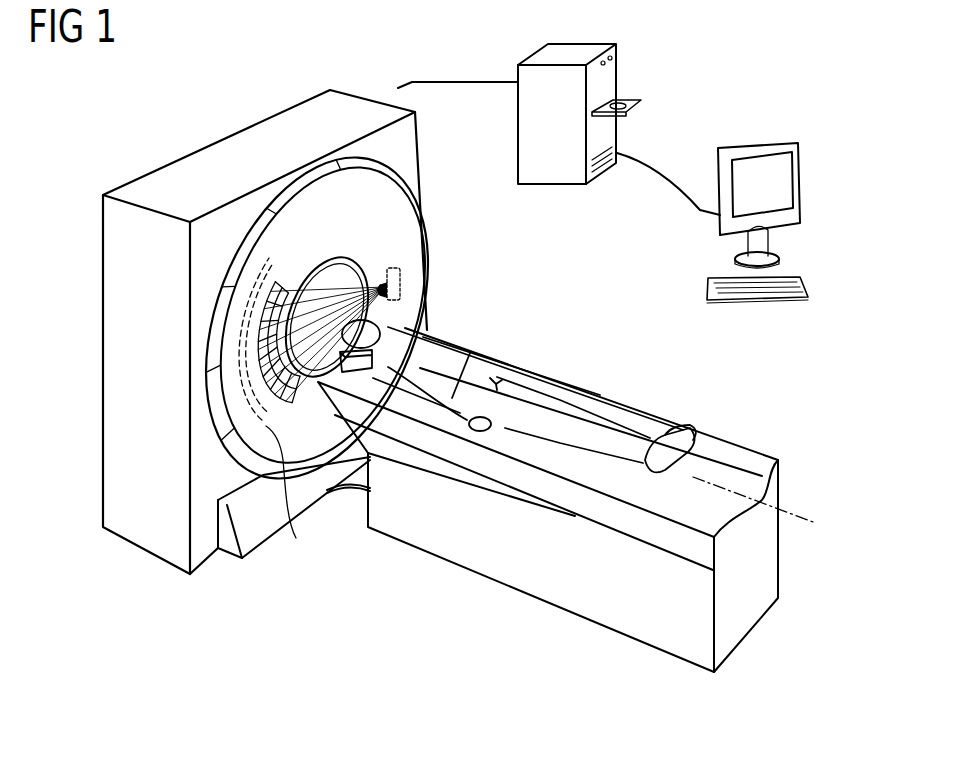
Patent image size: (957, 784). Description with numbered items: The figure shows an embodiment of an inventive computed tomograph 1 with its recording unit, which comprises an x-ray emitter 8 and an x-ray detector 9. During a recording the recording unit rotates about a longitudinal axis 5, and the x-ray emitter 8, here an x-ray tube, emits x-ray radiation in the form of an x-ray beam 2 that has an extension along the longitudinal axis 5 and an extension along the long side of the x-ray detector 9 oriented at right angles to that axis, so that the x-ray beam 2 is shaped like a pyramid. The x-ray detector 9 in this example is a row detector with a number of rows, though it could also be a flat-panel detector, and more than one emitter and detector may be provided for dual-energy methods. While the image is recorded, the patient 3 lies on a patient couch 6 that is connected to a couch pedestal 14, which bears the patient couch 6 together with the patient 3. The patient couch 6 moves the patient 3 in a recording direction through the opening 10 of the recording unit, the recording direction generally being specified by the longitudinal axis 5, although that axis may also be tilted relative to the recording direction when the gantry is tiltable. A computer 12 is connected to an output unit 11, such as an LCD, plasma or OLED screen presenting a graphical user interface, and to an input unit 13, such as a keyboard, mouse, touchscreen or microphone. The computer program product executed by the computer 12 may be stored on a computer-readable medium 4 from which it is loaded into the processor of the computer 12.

The computed tomography device 1 is at (265, 332).
The x-ray beam 2 is at (348, 277).
The patient 3 is at (465, 365).
The computer-readable medium 4 is at (622, 100).
The longitudinal axis 5 is at (802, 512).
The patient couch 6 is at (736, 447).
The x-ray emitter 8 is at (401, 275).
The x-ray detector 9 is at (282, 497).
The opening 10 is at (321, 278).
The output unit 11 is at (776, 143).
The computer 12 is at (567, 52).
The input unit 13 is at (707, 301).
The couch pedestal 14 is at (517, 564).